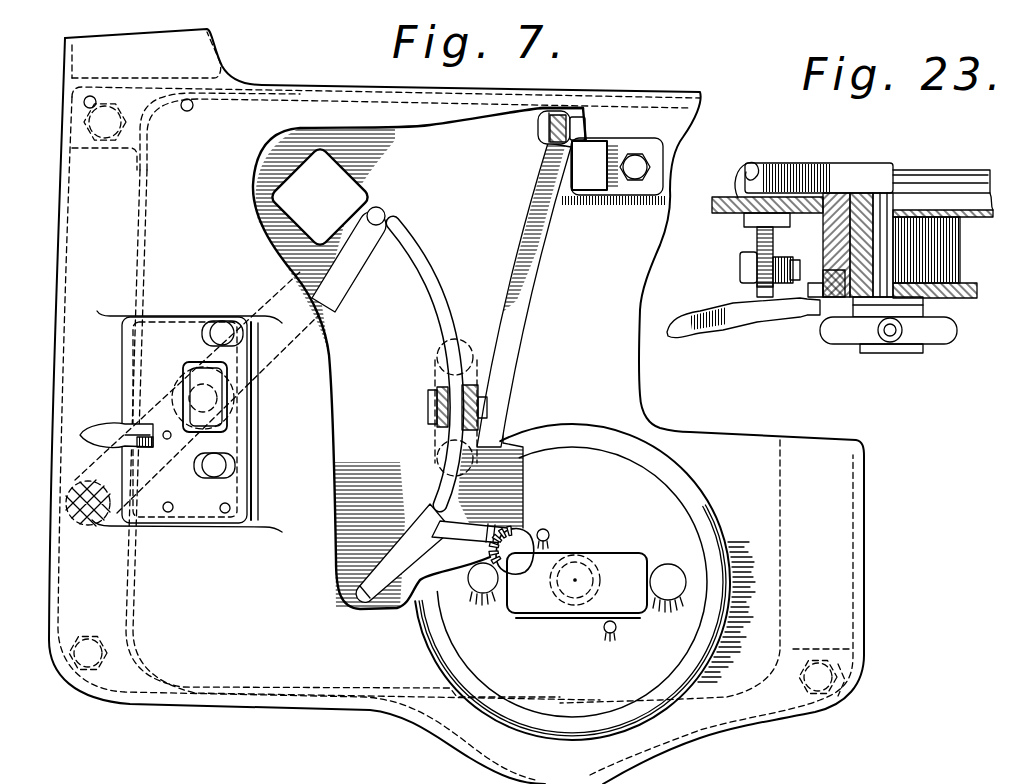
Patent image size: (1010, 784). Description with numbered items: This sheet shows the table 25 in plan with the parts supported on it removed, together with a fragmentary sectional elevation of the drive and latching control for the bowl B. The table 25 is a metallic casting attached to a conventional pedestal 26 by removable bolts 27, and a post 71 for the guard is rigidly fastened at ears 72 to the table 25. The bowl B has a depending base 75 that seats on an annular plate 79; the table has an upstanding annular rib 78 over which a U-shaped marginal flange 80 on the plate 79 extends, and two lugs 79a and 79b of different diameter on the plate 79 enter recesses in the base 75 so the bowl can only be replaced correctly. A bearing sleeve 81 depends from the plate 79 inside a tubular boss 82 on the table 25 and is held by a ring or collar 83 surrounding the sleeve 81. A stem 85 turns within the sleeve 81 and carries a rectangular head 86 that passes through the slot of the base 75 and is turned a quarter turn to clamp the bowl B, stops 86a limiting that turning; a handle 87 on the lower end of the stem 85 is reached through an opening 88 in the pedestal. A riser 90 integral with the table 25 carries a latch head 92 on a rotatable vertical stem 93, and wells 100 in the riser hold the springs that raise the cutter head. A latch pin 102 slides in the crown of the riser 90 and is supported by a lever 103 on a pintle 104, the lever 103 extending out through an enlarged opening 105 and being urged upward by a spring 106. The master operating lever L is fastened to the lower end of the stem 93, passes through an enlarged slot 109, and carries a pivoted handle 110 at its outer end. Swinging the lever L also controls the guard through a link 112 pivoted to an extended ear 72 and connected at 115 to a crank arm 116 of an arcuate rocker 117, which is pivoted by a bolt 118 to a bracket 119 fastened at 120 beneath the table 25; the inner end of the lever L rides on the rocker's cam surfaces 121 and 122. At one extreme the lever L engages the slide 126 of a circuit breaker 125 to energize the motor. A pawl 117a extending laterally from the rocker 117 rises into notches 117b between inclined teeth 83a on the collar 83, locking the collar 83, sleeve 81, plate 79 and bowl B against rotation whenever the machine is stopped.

In FIG. 7, the table 25 is at (866, 554).
In FIG. 7, the pedestal 26 is at (838, 672).
In FIG. 7, the removable bolts 27 is at (856, 714).
In FIG. 7, the post 71 is at (598, 141).
In FIG. 7, the ears 72 is at (650, 166).
In FIG. 23, the depending base 75 is at (843, 177).
In FIG. 23, the upstanding annular rib 78 is at (741, 194).
In FIG. 23, the annular plate 79 is at (817, 193).
In FIG. 7, the lug 79a is at (480, 590).
In FIG. 7, the lug 79b is at (672, 577).
In FIG. 7, the marginal flange 80 is at (693, 487).
In FIG. 23, the marginal flange 80 is at (753, 163).
In FIG. 23, the bearing sleeve 81 is at (874, 193).
In FIG. 23, the tubular boss 82 is at (958, 251).
In FIG. 7, the ring 83 is at (497, 550).
In FIG. 23, the ring 83 is at (829, 270).
In FIG. 7, the inclined teeth 83a is at (522, 527).
In FIG. 23, the inclined teeth 83a is at (975, 298).
In FIG. 23, the stem 85 is at (893, 183).
In FIG. 7, the rectangular head 86 is at (621, 557).
In FIG. 7, the stops 86a is at (549, 533).
In FIG. 23, the operating handle 87 is at (857, 344).
In FIG. 7, the opening 88 is at (463, 698).
In FIG. 7, the riser 90 is at (247, 403).
In FIG. 7, the latch head 92 is at (225, 413).
In FIG. 7, the rotatable vertical stem 93 is at (183, 397).
In FIG. 7, the wells 100 is at (227, 328).
In FIG. 7, the latch pin 102 is at (168, 439).
In FIG. 7, the lever 103 is at (93, 424).
In FIG. 7, the pintle 104 is at (143, 423).
In FIG. 7, the enlarged opening 105 is at (155, 527).
In FIG. 7, the coiled expansive spring 106 is at (122, 442).
In FIG. 7, the enlarged slot 109 is at (138, 297).
In FIG. 7, the handle 110 is at (88, 527).
In FIG. 7, the link 112 is at (555, 137).
In FIG. 7, the pivotal connection 115 is at (575, 112).
In FIG. 7, the crank arm 116 is at (518, 258).
In FIG. 7, the arcuate rocker member 117 is at (433, 325).
In FIG. 7, the pawl 117a is at (460, 520).
In FIG. 23, the pawl 117a is at (790, 322).
In FIG. 7, the notches 117b is at (508, 531).
In FIG. 7, the bolt 118 is at (489, 407).
In FIG. 23, the bolt 118 is at (782, 272).
In FIG. 7, the bracket 119 is at (479, 393).
In FIG. 23, the bracket 119 is at (756, 252).
In FIG. 7, the fastening 120 is at (440, 354).
In FIG. 23, the fastening 120 is at (748, 237).
In FIG. 7, the cam surface 121 is at (393, 562).
In FIG. 23, the cam surface 121 is at (703, 332).
In FIG. 7, the cam surface 122 is at (434, 292).
In FIG. 7, the circuit breaker 125 is at (320, 197).
In FIG. 7, the slidable control element 126 is at (350, 240).
In FIG. 7, the master operating lever L is at (327, 319).
In FIG. 23, the bowl B is at (807, 146).